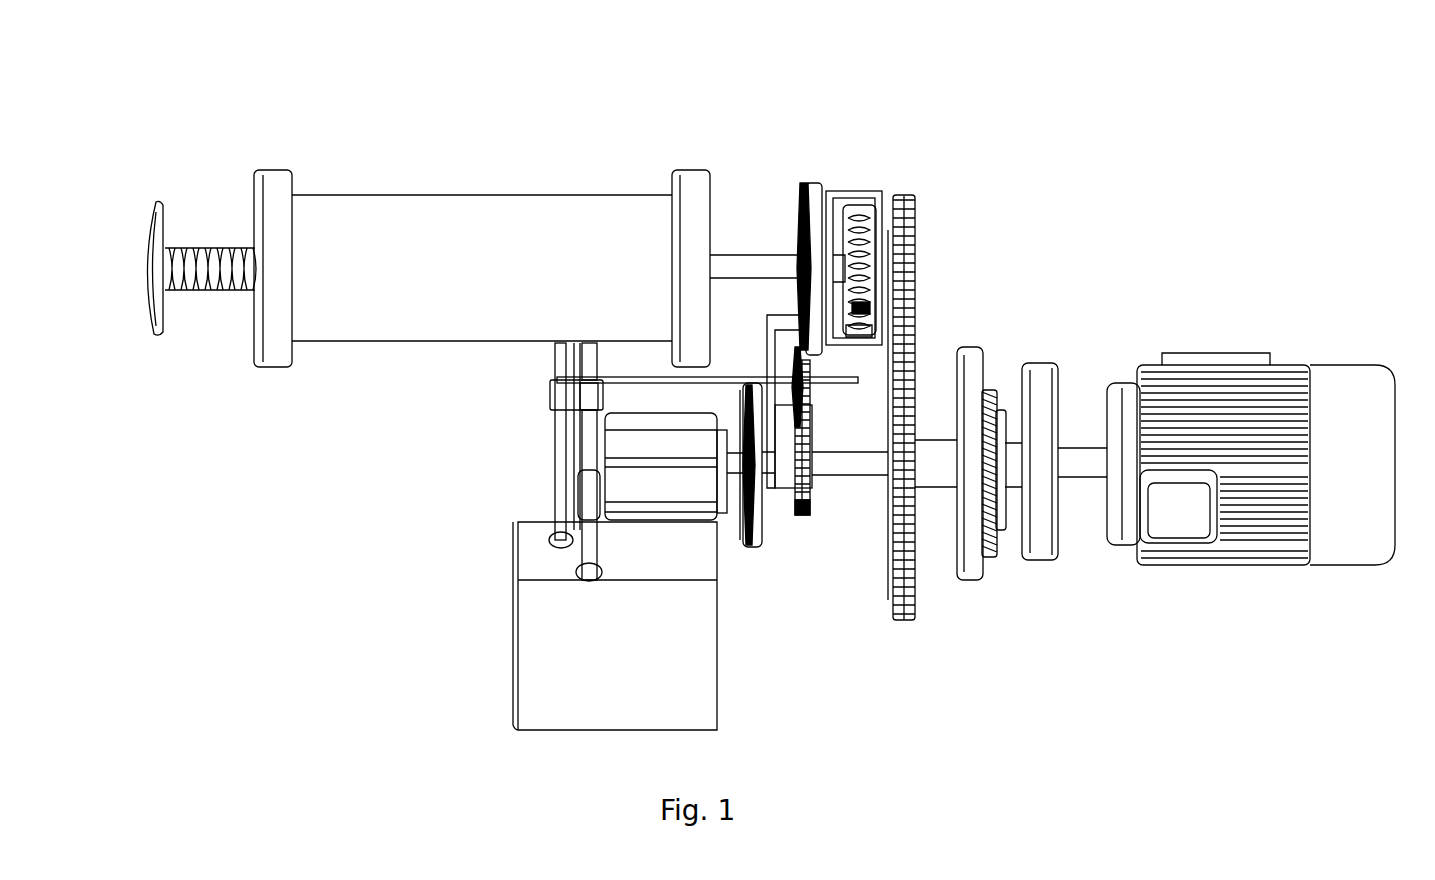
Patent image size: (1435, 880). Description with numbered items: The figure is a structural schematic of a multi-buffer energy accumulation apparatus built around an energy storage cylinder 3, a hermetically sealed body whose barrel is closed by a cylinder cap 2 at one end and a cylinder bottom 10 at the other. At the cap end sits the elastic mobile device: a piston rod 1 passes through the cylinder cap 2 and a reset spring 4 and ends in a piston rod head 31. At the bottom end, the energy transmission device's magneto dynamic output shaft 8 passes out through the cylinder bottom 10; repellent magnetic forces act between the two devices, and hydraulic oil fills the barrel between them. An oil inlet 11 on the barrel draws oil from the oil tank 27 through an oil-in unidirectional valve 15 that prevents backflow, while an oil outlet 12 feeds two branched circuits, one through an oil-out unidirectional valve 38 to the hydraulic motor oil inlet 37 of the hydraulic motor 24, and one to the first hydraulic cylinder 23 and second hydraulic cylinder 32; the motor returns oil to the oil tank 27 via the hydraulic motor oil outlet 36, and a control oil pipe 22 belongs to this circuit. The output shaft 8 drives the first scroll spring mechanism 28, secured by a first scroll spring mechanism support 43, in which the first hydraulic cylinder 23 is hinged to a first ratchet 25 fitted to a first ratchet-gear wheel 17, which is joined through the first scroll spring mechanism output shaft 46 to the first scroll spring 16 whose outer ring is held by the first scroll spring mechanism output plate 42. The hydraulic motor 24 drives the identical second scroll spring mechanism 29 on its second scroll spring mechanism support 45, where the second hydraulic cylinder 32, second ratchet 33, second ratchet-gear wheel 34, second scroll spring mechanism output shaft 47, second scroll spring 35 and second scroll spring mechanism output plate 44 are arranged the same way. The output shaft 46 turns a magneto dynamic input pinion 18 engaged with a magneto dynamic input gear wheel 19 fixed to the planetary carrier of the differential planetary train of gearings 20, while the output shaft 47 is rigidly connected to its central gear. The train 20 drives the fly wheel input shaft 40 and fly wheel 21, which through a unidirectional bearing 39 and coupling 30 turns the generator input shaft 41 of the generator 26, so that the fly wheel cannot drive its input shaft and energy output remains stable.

The piston rod 1 is at (222, 262).
The cylinder cap 2 is at (263, 263).
The energy storage cylinder 3 is at (320, 268).
The reset spring 4 is at (187, 258).
The magneto dynamic output shaft 8 is at (720, 260).
The cylinder bottom 10 is at (692, 268).
The oil inlet 11 is at (556, 343).
The oil outlet 12 is at (583, 346).
The oil-in unidirectional valve 15 is at (556, 381).
The first scroll spring 16 is at (811, 212).
The first ratchet-gear wheel 17 is at (856, 320).
The magneto dynamic input pinion 18 is at (897, 205).
The magneto dynamic input gear wheel 19 is at (890, 512).
The differential planetary train of gearings 20 is at (958, 405).
The fly wheel 21 is at (1047, 385).
The control oil pipe 22 is at (643, 381).
The first hydraulic cylinder 23 is at (856, 334).
The hydraulic motor 24 is at (640, 474).
The first ratchet 25 is at (862, 312).
The generator 26 is at (1192, 410).
The oil tank 27 is at (580, 655).
The first scroll spring mechanism 28 is at (800, 240).
The second scroll spring mechanism 29 is at (750, 540).
The coupling 30 is at (1058, 467).
The piston rod head 31 is at (148, 263).
The second hydraulic cylinder 32 is at (809, 470).
The second ratchet 33 is at (804, 480).
The second ratchet-gear wheel 34 is at (797, 512).
The second scroll spring 35 is at (742, 497).
The hydraulic motor oil outlet 36 is at (595, 492).
The hydraulic motor oil inlet 37 is at (580, 423).
The oil-out unidirectional valve 38 is at (582, 392).
The unidirectional bearing 39 is at (1022, 470).
The fly wheel input shaft 40 is at (1010, 458).
The generator input shaft 41 is at (1083, 463).
The first scroll spring mechanism output plate 42 is at (836, 220).
The first scroll spring mechanism support 43 is at (845, 222).
The second scroll spring mechanism output plate 44 is at (752, 522).
The second scroll spring mechanism support 45 is at (817, 465).
The first scroll spring mechanism output shaft 46 is at (893, 255).
The second scroll spring mechanism output shaft 47 is at (837, 462).